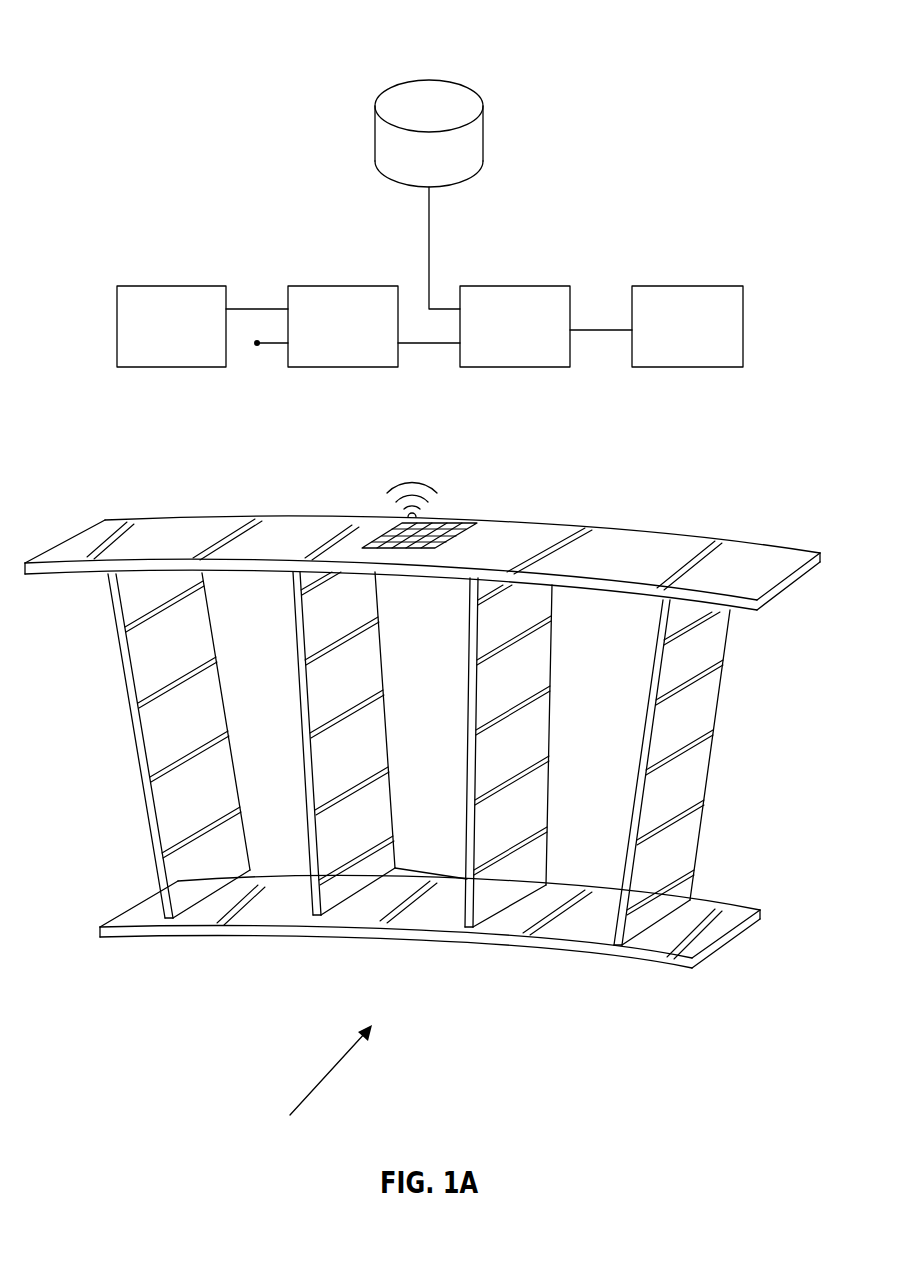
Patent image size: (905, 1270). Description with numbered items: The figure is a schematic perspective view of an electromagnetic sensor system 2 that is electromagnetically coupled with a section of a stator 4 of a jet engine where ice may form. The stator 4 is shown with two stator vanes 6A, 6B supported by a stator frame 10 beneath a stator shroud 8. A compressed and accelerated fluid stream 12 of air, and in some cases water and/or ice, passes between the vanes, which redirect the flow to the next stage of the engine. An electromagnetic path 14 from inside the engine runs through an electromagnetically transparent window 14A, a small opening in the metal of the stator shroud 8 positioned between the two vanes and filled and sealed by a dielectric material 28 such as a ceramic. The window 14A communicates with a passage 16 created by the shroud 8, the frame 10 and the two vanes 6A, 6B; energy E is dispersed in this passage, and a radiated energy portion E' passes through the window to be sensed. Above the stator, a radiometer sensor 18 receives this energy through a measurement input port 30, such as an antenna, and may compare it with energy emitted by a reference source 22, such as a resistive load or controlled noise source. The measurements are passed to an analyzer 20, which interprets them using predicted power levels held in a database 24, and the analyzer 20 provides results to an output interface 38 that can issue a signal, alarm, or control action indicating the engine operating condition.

The electromagnetic sensor system 2 is at (658, 38).
The stator 4 is at (126, 800).
The stator vane 6A is at (550, 728).
The stator vane 6B is at (294, 658).
The stator shroud 8 is at (758, 549).
The stator frame 10 is at (668, 964).
The fluid stream 12 is at (327, 1073).
The electromagnetic path 14 is at (455, 512).
The electromagnetic transparent window 14A is at (454, 528).
The passage 16 is at (430, 838).
The radiometer sensor 18 is at (343, 285).
The analyzer 20 is at (527, 285).
The reference source 22 is at (171, 285).
The database 24 is at (430, 82).
The dielectric material 28 is at (383, 539).
The input port 30 is at (272, 346).
The output interface 38 is at (697, 285).
The energy E is at (439, 723).
The radiated energy portion E' is at (412, 467).